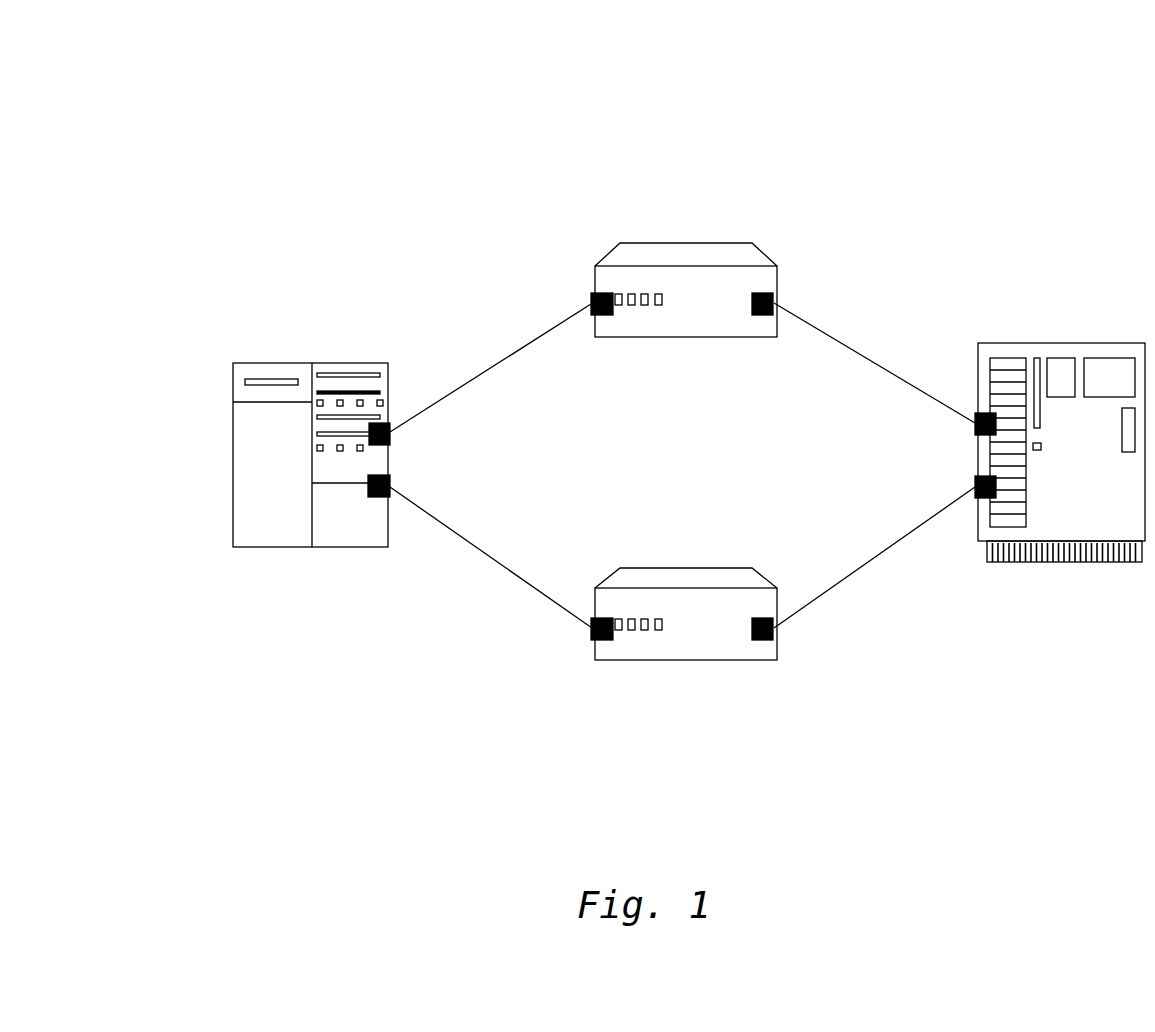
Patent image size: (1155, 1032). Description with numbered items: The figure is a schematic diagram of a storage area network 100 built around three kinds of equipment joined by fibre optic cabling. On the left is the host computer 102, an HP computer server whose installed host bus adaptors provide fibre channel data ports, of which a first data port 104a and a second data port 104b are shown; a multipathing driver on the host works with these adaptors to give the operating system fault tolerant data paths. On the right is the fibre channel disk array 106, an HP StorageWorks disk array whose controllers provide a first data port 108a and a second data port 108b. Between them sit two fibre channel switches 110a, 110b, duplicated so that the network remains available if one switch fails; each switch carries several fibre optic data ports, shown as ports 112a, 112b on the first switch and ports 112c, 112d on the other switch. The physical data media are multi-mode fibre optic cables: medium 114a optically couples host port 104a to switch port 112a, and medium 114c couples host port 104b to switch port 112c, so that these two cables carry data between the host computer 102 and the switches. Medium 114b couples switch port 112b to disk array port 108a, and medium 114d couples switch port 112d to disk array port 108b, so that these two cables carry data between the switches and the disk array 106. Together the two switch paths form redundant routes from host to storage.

The storage area network 100 is at (333, 130).
The host computer 102 is at (317, 578).
The first data port of the host computer 104a is at (394, 421).
The second data port of the host computer 104b is at (396, 502).
The fibre channel disk array 106 is at (1060, 312).
The first data port of the disk array 108a is at (973, 410).
The second data port of the disk array 108b is at (972, 500).
The fibre channel switch 110a is at (709, 216).
The other fibre channel switch 110b is at (688, 683).
The first data port of the fibre channel switch 112a is at (580, 294).
The another port of the fibre channel switch 112b is at (796, 296).
The data port of the other fibre channel switch 112c is at (580, 640).
The data port of the other fibre channel switch 112d is at (798, 640).
The physical data medium 114a is at (507, 383).
The physical data medium 114b is at (858, 382).
The physical data medium 114c is at (498, 540).
The physical data medium 114d is at (868, 540).